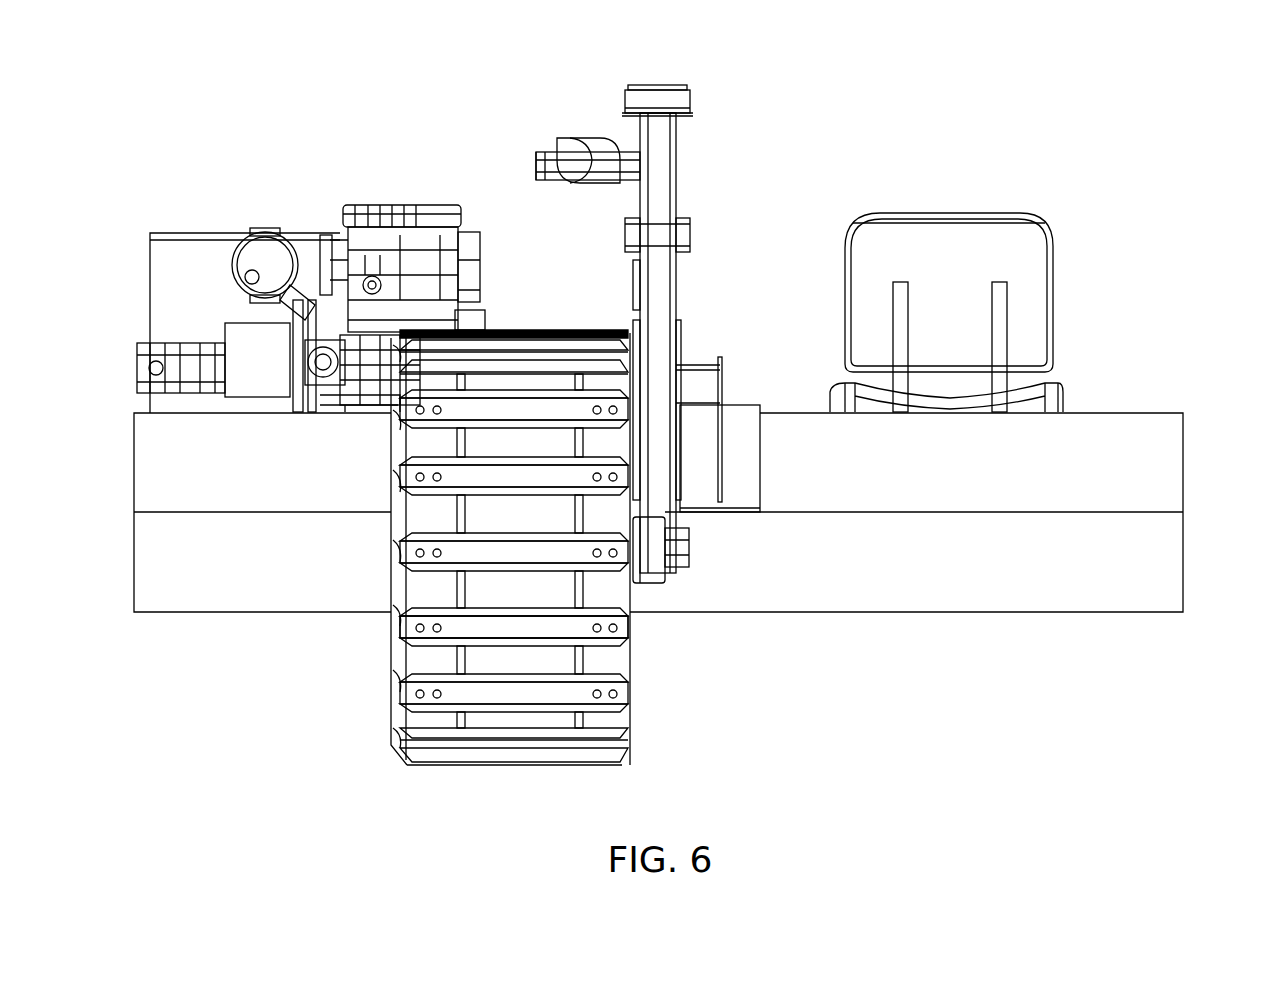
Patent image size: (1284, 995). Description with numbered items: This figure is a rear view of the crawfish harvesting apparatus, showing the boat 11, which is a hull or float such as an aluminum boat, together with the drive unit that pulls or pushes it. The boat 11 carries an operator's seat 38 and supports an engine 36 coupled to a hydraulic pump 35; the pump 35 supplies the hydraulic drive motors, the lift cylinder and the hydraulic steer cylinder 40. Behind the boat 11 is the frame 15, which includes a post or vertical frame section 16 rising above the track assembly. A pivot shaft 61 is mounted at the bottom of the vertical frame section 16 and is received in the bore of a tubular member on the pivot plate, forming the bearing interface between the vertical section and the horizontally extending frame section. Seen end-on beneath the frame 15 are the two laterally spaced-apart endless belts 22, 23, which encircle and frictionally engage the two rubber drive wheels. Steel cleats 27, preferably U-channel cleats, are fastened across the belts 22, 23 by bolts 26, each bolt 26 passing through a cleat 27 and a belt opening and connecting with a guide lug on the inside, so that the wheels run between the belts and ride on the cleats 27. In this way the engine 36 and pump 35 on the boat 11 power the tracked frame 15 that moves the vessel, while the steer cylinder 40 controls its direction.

The boat 11 is at (1160, 570).
The frame 15 is at (767, 122).
The vertical frame section 16 is at (683, 282).
The endless belt 22 is at (622, 597).
The endless belt 23 is at (412, 515).
The bolt 26 is at (420, 630).
The cleat 27 is at (515, 765).
The hydraulic pump 35 is at (228, 142).
The engine 36 is at (393, 108).
The operator's seat 38 is at (1057, 252).
The hydraulic steer cylinder 40 is at (583, 140).
The pivot shaft 61 is at (692, 545).